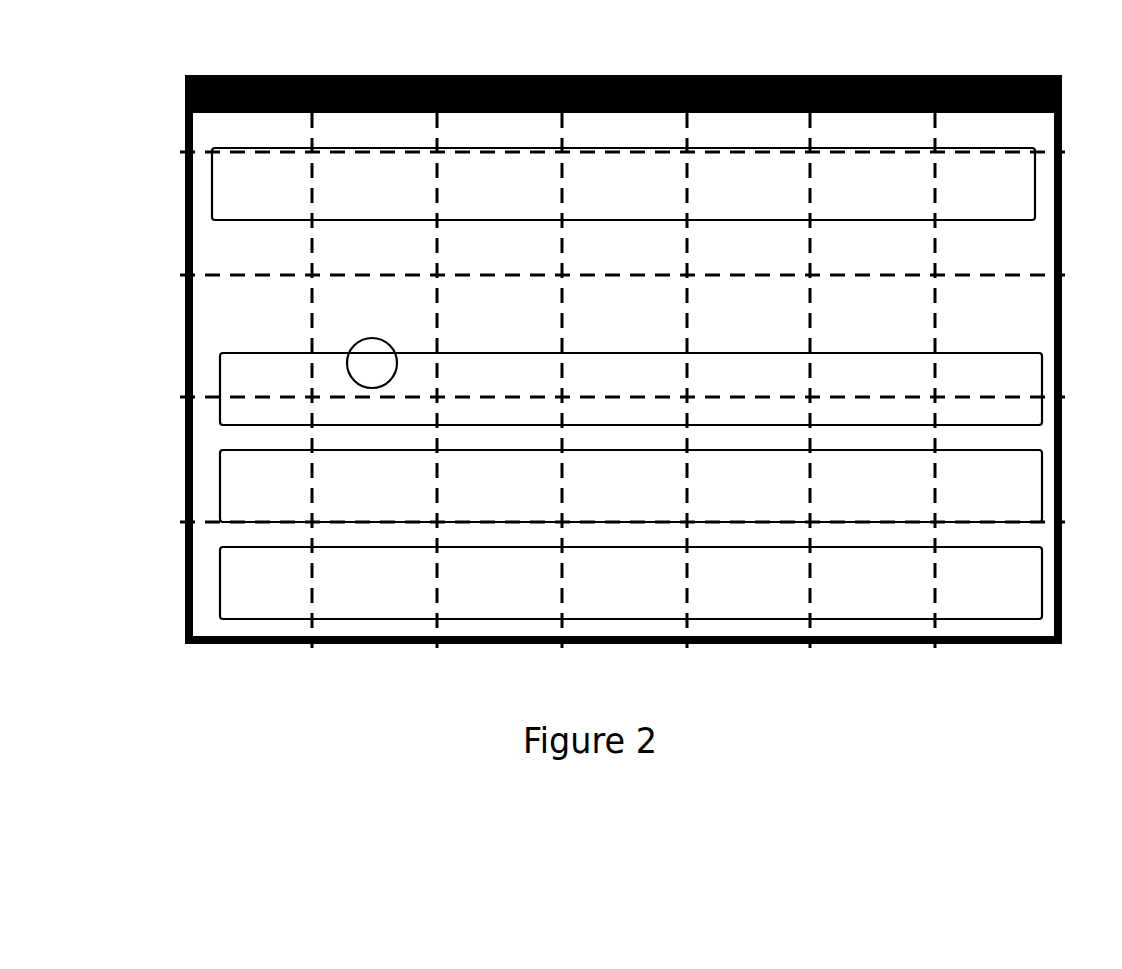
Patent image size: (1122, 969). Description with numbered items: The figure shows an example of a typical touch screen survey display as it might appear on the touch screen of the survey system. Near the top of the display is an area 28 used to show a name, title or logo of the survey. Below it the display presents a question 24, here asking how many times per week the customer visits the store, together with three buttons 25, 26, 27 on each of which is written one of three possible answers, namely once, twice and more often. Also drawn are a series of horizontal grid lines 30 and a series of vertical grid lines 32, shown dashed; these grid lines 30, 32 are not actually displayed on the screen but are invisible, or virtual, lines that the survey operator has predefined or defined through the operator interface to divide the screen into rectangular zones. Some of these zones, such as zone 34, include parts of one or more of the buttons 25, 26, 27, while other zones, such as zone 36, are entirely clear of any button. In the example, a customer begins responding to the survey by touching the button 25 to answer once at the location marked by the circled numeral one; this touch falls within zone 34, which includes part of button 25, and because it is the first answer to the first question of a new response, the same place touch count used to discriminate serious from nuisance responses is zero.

The question 24 is at (222, 252).
The button 25 is at (228, 378).
The button 26 is at (228, 490).
The button 27 is at (230, 583).
The area 28 is at (222, 188).
The horizontal grid lines 30 is at (1027, 395).
The vertical grid lines 32 is at (687, 135).
The zone 34 is at (418, 322).
The zone 36 is at (912, 189).